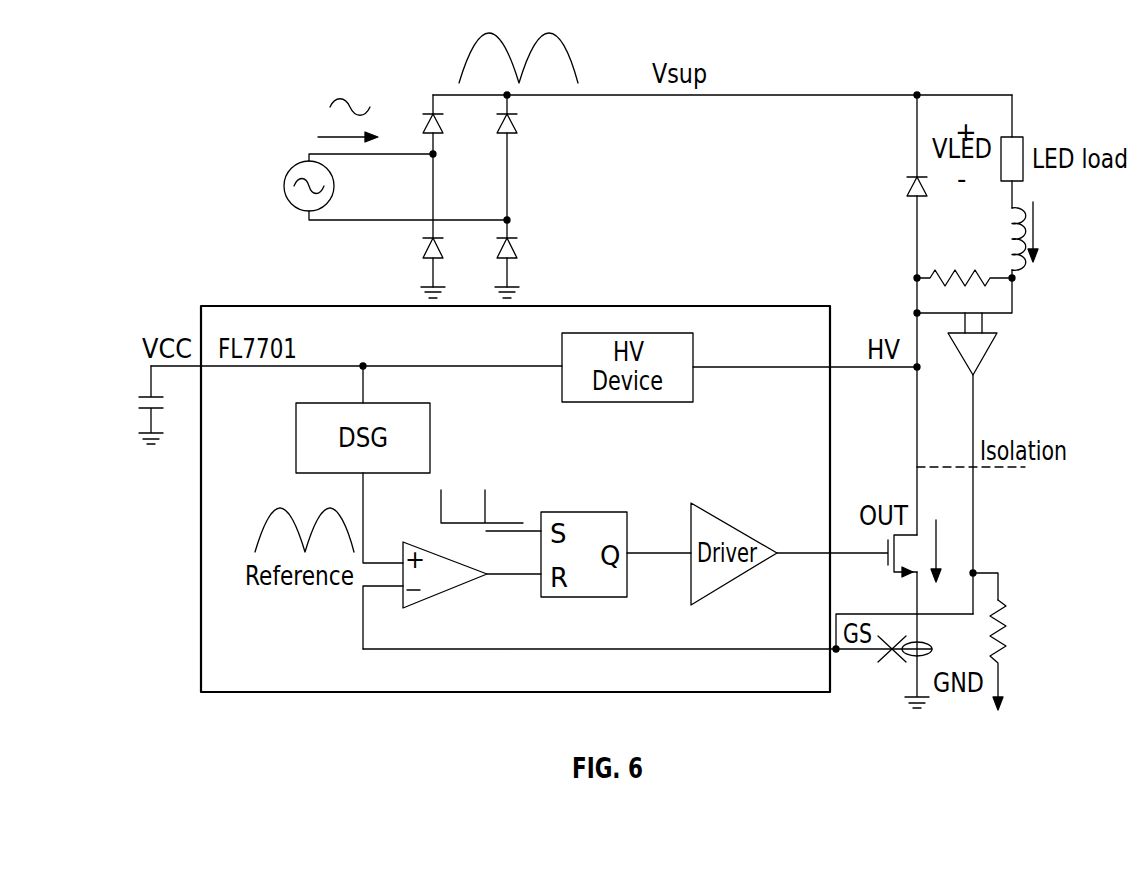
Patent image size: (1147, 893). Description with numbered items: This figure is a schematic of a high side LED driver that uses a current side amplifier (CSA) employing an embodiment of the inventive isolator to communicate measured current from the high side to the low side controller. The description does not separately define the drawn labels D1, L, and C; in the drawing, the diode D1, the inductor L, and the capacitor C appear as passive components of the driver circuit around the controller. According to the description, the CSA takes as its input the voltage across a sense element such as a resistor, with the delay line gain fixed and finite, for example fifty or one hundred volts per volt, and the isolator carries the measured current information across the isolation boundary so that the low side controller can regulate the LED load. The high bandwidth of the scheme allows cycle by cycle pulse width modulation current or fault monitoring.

The diode D1 is at (897, 315).
The inductor L is at (1001, 239).
The VCC capacitor C is at (140, 405).